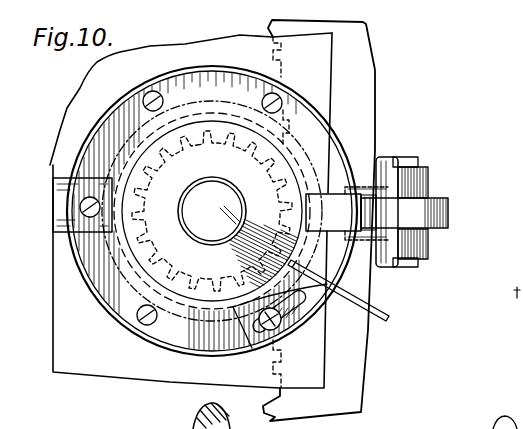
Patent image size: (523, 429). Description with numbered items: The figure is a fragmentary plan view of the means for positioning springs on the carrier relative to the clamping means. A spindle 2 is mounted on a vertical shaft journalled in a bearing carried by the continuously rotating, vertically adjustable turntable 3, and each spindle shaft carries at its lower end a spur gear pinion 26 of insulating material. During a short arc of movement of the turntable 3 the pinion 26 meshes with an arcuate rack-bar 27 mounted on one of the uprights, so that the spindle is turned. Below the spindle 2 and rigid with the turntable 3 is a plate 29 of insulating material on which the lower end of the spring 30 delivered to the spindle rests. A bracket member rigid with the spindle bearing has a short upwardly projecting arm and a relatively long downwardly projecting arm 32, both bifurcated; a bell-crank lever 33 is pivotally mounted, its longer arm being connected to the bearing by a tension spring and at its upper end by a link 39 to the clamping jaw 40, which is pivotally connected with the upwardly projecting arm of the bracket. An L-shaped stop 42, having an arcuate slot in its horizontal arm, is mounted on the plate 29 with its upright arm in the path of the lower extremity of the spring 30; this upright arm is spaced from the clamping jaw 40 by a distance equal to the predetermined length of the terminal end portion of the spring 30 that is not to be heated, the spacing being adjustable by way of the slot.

The spindle 2 is at (229, 178).
The turntable 3 is at (88, 368).
The spur gear pinion 26 is at (165, 244).
The arcuate rack-bar 27 is at (373, 352).
The plate of insulating material 29 is at (138, 118).
The spring 30 is at (177, 327).
The downwardly projecting arm 32 is at (428, 250).
The bell-crank lever 33 is at (448, 209).
The link 39 is at (352, 186).
The clamping jaw 40 is at (333, 212).
The L-shaped stop 42 is at (398, 321).